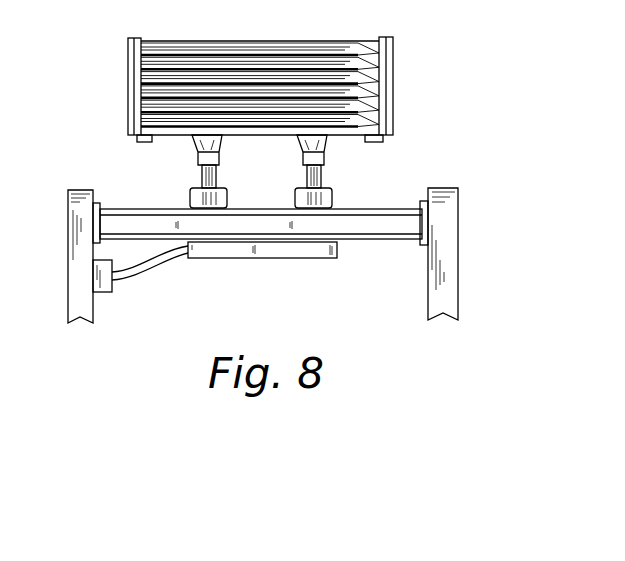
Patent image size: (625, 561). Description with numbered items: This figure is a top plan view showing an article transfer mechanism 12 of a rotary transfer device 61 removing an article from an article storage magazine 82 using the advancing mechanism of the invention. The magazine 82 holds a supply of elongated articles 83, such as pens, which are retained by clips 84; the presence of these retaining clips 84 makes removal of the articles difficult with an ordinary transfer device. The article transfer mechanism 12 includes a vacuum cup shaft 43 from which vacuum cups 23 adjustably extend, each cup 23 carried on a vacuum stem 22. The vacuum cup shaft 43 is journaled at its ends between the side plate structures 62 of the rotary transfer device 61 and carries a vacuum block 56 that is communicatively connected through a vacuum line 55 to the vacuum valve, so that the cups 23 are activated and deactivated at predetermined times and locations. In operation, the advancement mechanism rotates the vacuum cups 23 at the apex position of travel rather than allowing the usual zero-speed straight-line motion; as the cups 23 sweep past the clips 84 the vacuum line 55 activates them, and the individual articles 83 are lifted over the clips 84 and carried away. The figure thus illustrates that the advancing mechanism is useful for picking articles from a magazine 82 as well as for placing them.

The article transfer mechanism 12 is at (123, 182).
The vacuum stem 22 is at (213, 186).
The vacuum cup 23 is at (190, 143).
The vacuum cup shaft 43 is at (380, 213).
The vacuum line 55 is at (150, 264).
The vacuum block 56 is at (314, 258).
The rotary transfer device 61 is at (489, 249).
The side plate structure 62 is at (434, 262).
The article storage magazine 82 is at (433, 100).
The elongated article 83 is at (366, 122).
The clip 84 is at (139, 146).